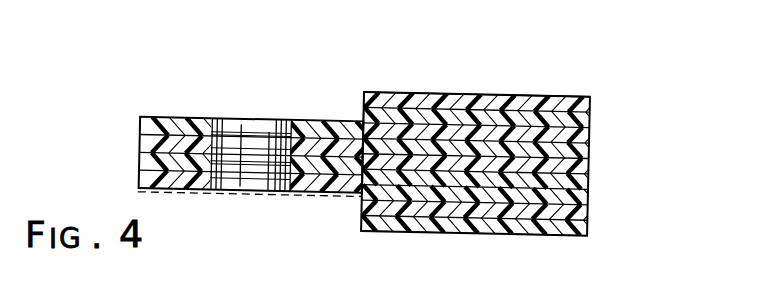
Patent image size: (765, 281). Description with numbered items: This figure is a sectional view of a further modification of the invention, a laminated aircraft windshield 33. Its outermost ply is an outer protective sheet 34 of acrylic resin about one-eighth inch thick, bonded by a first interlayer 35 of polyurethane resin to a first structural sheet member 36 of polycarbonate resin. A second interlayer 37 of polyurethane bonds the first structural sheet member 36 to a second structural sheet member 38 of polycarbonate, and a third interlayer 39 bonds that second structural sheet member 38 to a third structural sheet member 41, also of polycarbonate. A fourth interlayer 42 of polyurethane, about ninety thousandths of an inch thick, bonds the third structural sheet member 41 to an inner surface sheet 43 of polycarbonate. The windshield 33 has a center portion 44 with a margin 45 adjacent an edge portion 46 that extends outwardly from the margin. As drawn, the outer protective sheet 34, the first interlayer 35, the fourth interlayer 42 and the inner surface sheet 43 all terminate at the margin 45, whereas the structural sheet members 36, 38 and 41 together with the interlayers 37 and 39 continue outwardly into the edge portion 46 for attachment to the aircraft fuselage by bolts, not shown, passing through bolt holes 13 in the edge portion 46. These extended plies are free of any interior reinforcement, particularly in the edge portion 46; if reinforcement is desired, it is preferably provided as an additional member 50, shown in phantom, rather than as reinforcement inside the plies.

The bolt holes 13 is at (274, 197).
The windshield 33 is at (457, 69).
The outer protective sheet 34 is at (590, 102).
The first interlayer 35 is at (590, 121).
The first structural sheet member 36 is at (590, 132).
The second interlayer 37 is at (590, 145).
The second structural sheet member 38 is at (590, 162).
The third interlayer 39 is at (590, 177).
The third structural sheet member 41 is at (590, 193).
The fourth interlayer 42 is at (590, 207).
The inner surface sheet 43 is at (590, 227).
The center portion 44 is at (564, 95).
The margin 45 is at (366, 90).
The edge portion 46 is at (185, 117).
The additional member 50 is at (187, 197).